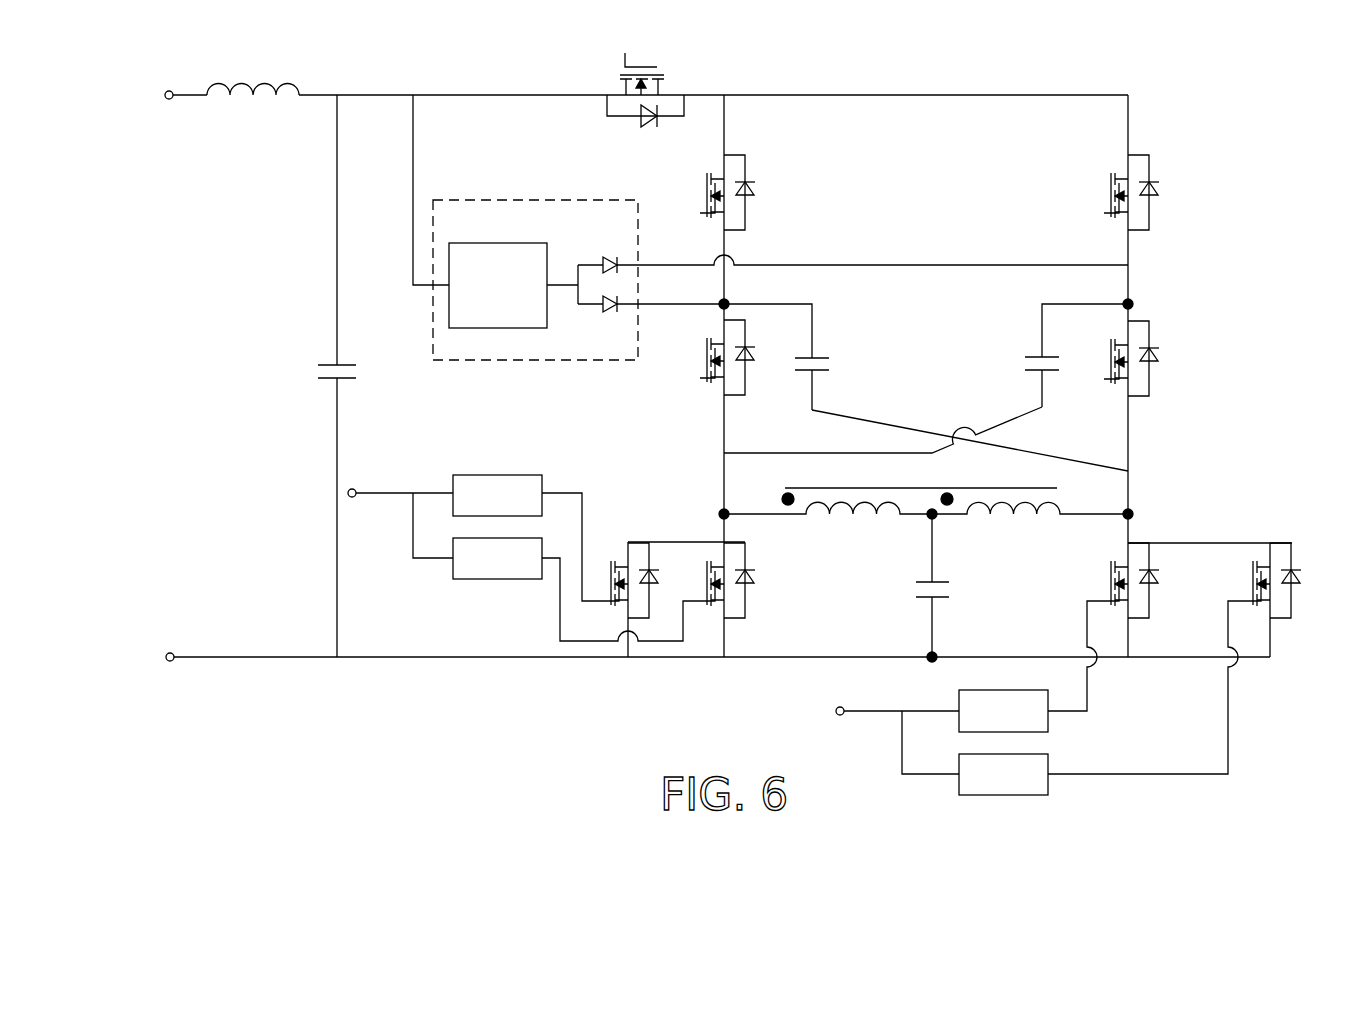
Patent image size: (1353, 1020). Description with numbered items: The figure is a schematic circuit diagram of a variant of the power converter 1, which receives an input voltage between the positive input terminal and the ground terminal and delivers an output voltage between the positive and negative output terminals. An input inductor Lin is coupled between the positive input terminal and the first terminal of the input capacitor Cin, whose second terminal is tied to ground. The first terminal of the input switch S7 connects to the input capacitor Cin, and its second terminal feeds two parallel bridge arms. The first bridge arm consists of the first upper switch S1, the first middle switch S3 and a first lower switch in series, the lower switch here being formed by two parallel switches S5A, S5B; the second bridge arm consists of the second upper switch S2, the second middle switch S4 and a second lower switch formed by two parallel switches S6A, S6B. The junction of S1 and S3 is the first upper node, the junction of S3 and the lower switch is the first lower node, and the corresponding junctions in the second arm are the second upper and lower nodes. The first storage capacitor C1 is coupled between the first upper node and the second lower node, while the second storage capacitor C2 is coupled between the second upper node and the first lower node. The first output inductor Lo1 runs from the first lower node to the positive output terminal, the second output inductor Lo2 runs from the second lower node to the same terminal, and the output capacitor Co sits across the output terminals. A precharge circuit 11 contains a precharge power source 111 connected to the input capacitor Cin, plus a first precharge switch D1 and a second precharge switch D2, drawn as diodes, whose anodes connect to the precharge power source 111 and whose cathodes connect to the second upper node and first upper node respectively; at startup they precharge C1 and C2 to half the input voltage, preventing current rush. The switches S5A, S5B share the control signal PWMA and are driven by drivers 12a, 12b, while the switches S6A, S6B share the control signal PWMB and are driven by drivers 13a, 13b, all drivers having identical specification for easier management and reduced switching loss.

The power converter 1 is at (1269, 109).
The precharge circuit 11 is at (535, 200).
The precharge power source 111 is at (498, 243).
The driver 12a is at (497, 475).
The driver 12b is at (500, 579).
The driver 13a is at (1050, 720).
The driver 13b is at (1005, 795).
The first upper switch S1 is at (709, 192).
The second upper switch S2 is at (1112, 192).
The first middle switch S3 is at (709, 357).
The second middle switch S4 is at (1112, 358).
The switch S5A is at (621, 568).
The switch S5B is at (705, 580).
The switch S6A is at (1103, 580).
The switch S6B is at (1244, 580).
The input switch S7 is at (645, 79).
The first precharge switch D1 is at (602, 250).
The second precharge switch D2 is at (602, 324).
The first storage capacitor C1 is at (799, 357).
The second storage capacitor C2 is at (1058, 355).
The input capacitor Cin is at (309, 376).
The output capacitor Co is at (913, 585).
The input inductor Lin is at (253, 70).
The first output inductor Lo1 is at (828, 527).
The second output inductor Lo2 is at (1030, 527).